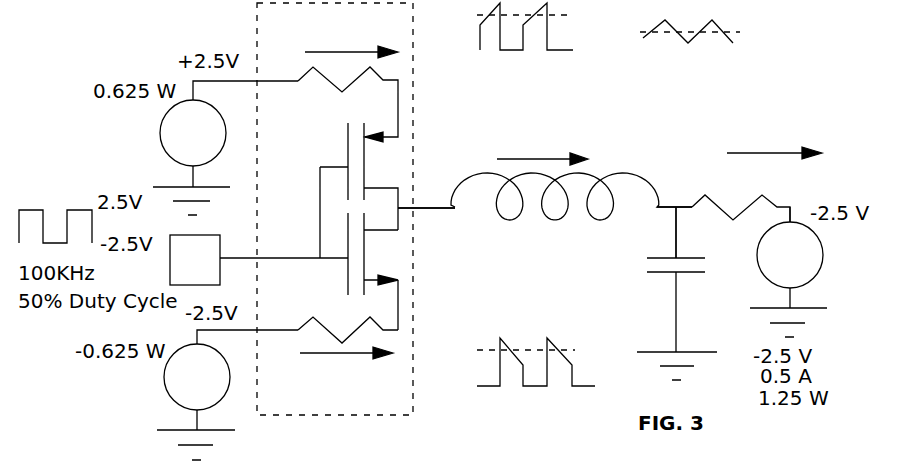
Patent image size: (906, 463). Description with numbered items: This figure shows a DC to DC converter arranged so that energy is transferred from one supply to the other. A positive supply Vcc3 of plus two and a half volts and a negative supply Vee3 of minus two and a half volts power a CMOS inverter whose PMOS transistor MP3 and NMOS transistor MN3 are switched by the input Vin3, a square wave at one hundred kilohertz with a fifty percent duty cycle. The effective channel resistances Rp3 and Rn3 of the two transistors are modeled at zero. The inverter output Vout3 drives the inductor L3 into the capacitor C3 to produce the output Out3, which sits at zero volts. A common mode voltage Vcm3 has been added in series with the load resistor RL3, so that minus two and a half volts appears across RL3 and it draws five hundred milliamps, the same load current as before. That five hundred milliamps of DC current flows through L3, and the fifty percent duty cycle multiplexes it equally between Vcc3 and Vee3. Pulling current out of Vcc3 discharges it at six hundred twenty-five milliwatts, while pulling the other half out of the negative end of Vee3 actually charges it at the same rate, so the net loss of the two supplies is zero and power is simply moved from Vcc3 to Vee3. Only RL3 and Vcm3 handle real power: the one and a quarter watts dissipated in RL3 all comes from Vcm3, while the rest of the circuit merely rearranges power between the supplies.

The positive supply battery Vcc3 is at (225, 148).
The negative supply battery Vee3 is at (227, 395).
The input voltage source Vin3 is at (183, 233).
The PMOS channel resistance Rp3 is at (346, 82).
The NMOS channel resistance Rn3 is at (346, 335).
The PMOS transistor MP3 is at (387, 190).
The NMOS transistor MN3 is at (380, 271).
The inverter output voltage Vout3 is at (439, 225).
The inductor L3 is at (571, 179).
The output capacitor C3 is at (633, 293).
The output voltage node Out3 is at (684, 198).
The load resistor RL3 is at (773, 160).
The common mode voltage source Vcm3 is at (788, 272).